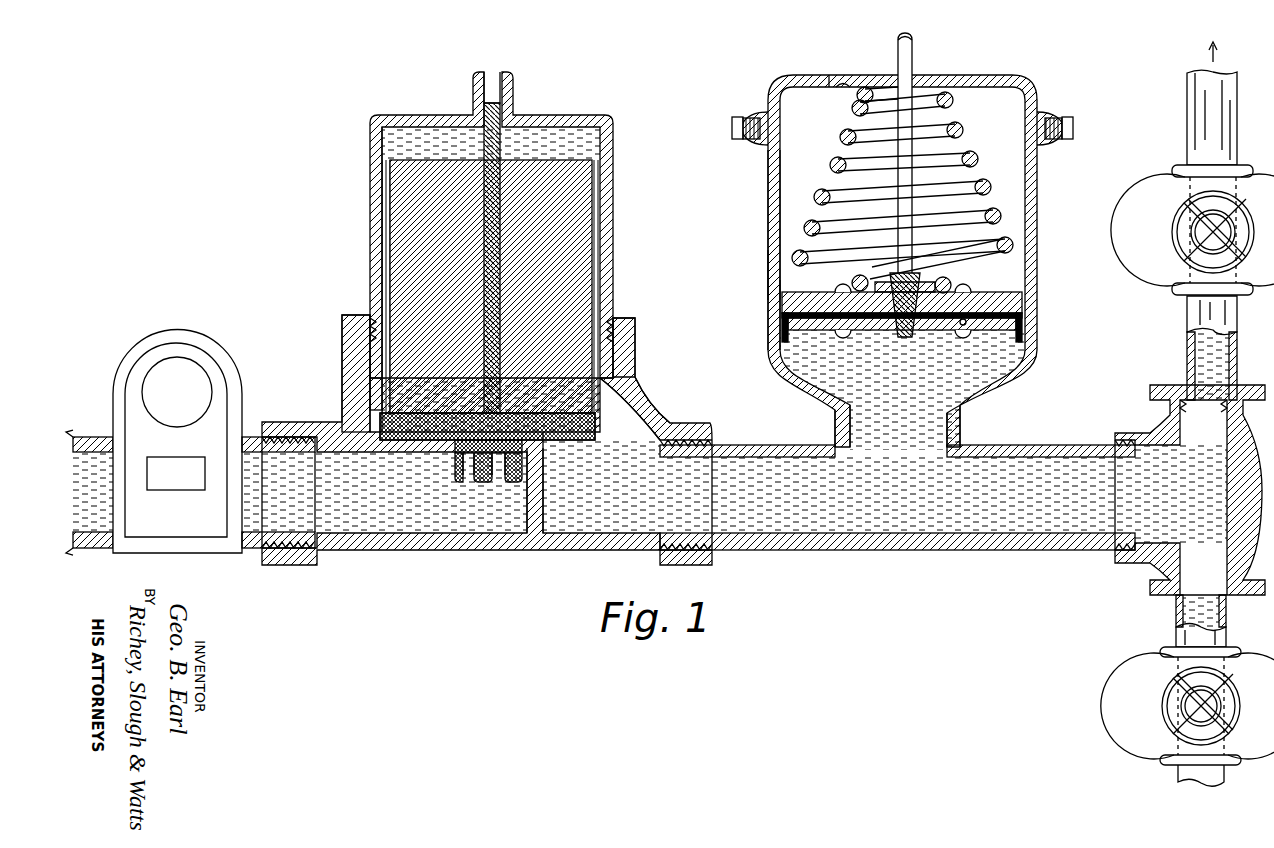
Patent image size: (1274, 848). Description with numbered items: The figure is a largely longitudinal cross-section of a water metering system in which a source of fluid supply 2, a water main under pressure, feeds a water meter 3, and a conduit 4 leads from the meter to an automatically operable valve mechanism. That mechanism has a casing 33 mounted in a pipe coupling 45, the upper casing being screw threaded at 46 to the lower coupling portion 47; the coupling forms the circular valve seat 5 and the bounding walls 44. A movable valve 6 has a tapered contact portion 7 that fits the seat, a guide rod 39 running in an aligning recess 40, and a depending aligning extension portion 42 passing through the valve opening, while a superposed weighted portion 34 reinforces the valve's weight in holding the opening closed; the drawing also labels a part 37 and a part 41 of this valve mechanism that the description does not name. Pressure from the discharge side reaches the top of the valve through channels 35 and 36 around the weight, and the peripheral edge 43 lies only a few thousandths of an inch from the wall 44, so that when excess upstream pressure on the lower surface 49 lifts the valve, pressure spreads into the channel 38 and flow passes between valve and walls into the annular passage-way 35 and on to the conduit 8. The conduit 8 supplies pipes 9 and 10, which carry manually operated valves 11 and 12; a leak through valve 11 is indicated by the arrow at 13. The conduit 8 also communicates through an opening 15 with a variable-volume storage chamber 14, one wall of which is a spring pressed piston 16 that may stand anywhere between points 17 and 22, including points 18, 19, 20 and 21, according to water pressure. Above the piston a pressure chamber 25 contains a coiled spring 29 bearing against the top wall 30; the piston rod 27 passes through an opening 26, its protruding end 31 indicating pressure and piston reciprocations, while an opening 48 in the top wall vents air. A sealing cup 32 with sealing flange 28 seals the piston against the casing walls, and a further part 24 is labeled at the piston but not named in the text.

The source of fluid supply 2 is at (100, 470).
The water meter 3 is at (218, 352).
The conduit 4 is at (262, 518).
The valve seat 5 is at (535, 455).
The valve 6 is at (430, 425).
The contact portion 7 is at (460, 472).
The conduit 8 is at (917, 513).
The supply pipe 9 is at (1178, 618).
The supply pipe 10 is at (1188, 340).
The valve 11 is at (1195, 235).
The valve 12 is at (1180, 700).
The arrow 13 is at (1210, 52).
The storage chamber 14 is at (840, 357).
The opening 15 is at (955, 428).
The piston 16 is at (880, 307).
The point 17 is at (782, 318).
The point 18 is at (782, 298).
The point 19 is at (770, 279).
The point 20 is at (768, 259).
The point 21 is at (768, 238).
The point 22 is at (768, 217).
The gasket 24 is at (1023, 333).
The pressure chamber 25 is at (997, 138).
The opening 26 is at (913, 87).
The piston rod 27 is at (905, 178).
The sealing flange 28 is at (1015, 337).
The coiled spring 29 is at (815, 197).
The top wall 30 is at (843, 88).
The protruding end 31 is at (910, 60).
The sealing cup 32 is at (973, 335).
The casing 33 is at (370, 188).
The weighted portion 34 is at (590, 190).
The channel 35 is at (375, 395).
The channel 36 is at (380, 168).
The piston rod 37 is at (523, 147).
The channel 38 is at (570, 445).
The guide rod 39 is at (491, 143).
The aligning recess 40 is at (500, 108).
The clearance space 41 is at (382, 253).
The aligning extension portion 42 is at (497, 462).
The peripheral edge 43 is at (405, 412).
The walls 44 is at (380, 440).
The pipe coupling 45 is at (534, 546).
The screw threads 46 is at (612, 320).
The lower coupling portion 47 is at (623, 380).
The opening 48 is at (829, 75).
The lower surface 49 is at (470, 460).